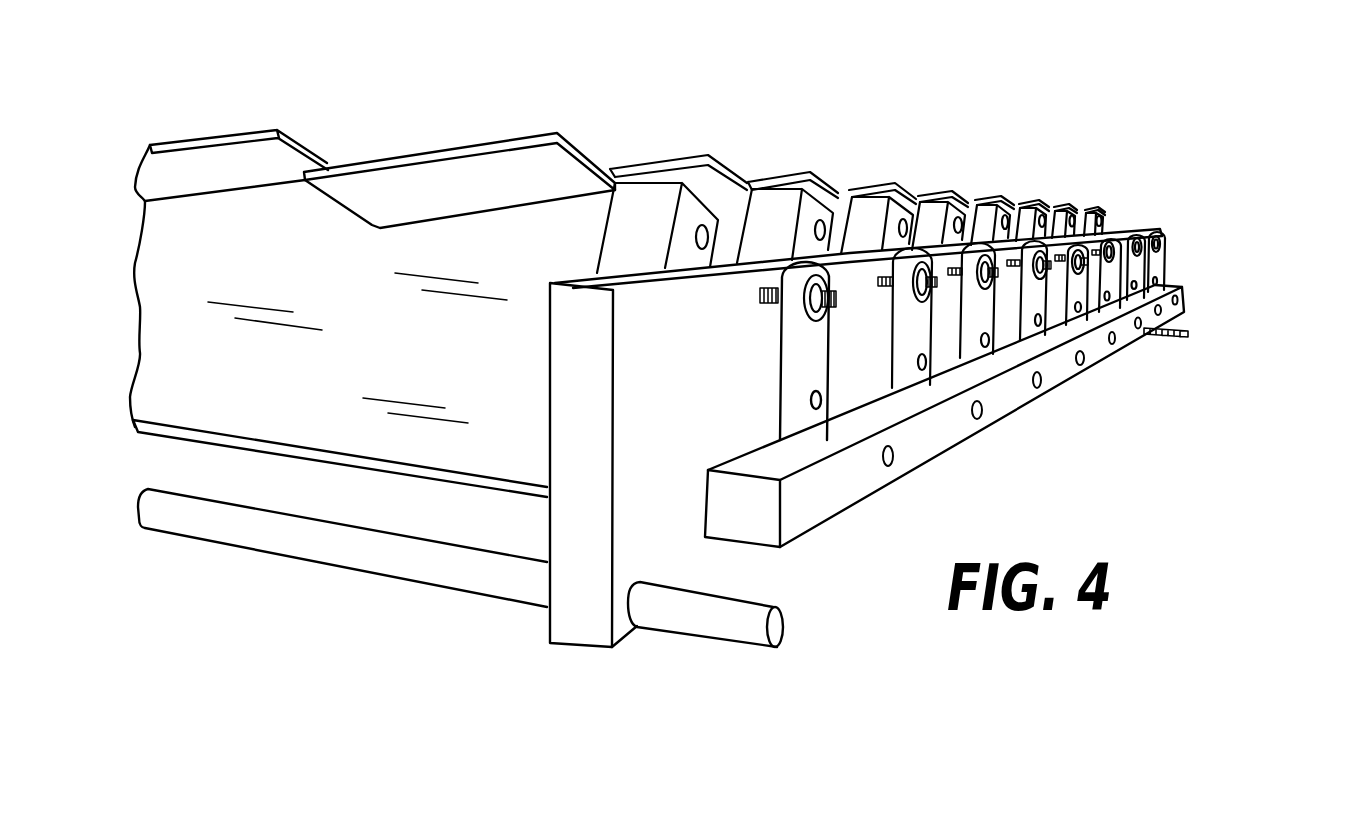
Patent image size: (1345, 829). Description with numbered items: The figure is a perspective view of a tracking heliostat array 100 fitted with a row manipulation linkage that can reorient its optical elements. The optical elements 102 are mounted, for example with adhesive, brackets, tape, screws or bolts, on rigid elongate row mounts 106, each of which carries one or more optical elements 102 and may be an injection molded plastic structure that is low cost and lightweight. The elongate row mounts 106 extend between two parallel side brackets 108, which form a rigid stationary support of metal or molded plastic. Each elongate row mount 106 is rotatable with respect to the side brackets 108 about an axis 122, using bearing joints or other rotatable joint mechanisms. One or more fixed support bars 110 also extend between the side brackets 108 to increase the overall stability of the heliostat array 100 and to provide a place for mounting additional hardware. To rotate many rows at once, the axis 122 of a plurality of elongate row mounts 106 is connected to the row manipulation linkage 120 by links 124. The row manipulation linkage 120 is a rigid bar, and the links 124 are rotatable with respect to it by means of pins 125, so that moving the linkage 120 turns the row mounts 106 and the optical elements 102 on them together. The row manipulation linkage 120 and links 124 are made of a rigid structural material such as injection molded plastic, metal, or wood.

The heliostat array 100 is at (1127, 136).
The optical element 102 is at (493, 178).
The elongate row mount 106 is at (478, 360).
The side bracket 108 is at (725, 397).
The fixed support bar 110 is at (1190, 333).
The row manipulation linkage 120 is at (810, 505).
The axis 122 is at (837, 302).
The link 124 is at (818, 360).
The pin 125 is at (898, 457).